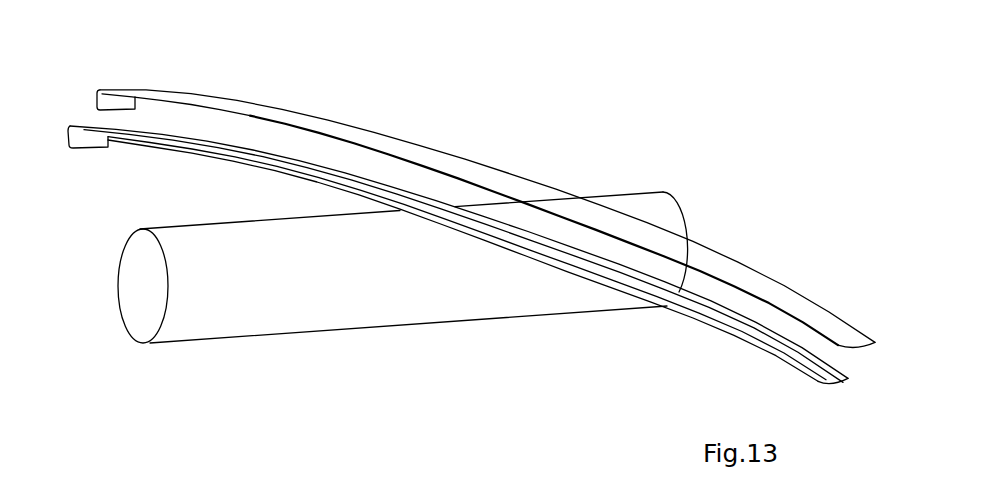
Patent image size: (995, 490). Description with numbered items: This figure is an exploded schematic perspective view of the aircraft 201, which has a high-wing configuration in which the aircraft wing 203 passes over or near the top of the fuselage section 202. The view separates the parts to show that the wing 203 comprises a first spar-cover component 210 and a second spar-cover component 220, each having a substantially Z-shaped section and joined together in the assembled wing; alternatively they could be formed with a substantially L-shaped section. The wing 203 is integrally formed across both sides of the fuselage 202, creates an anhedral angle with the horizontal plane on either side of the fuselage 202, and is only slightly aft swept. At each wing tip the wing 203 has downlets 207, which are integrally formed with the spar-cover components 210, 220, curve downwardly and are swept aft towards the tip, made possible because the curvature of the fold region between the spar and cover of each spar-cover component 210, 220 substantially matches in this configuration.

The aircraft 201 is at (464, 193).
The fuselage section 202 is at (337, 318).
The aircraft wing 203 is at (487, 174).
The downlets 207 is at (83, 97).
The first spar-cover component 210 is at (707, 309).
The second spar-cover component 220 is at (621, 238).